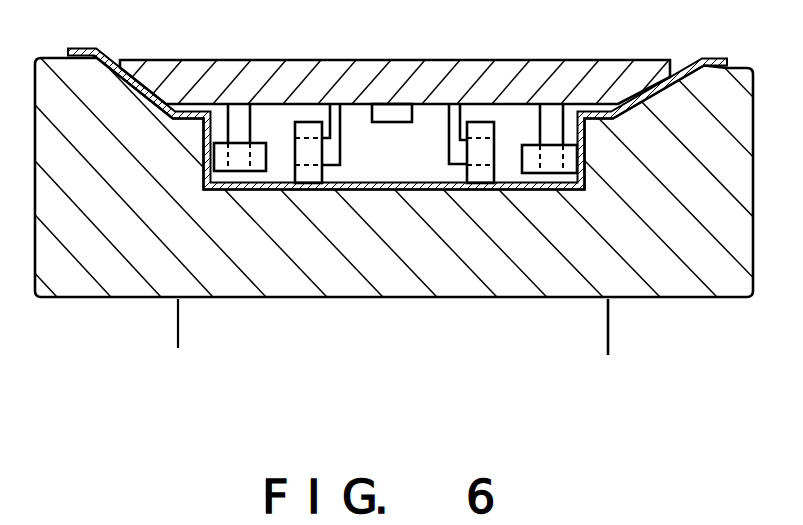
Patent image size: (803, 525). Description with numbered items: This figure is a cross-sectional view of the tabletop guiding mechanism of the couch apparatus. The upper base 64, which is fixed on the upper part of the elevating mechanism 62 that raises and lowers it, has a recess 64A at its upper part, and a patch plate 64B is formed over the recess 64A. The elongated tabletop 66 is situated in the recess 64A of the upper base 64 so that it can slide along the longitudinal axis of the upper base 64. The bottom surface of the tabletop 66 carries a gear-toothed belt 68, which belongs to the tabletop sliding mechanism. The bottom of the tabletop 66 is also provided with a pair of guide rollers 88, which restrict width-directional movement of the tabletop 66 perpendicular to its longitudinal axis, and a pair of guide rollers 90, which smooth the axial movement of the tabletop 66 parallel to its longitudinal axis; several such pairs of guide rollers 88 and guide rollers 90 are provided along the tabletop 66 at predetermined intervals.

The elevating mechanism 62 is at (595, 317).
The upper base 64 is at (693, 287).
The recess 64A is at (410, 158).
The patch plate 64B is at (362, 190).
The tabletop 66 is at (463, 83).
The belt 68 is at (397, 110).
The guide rollers 88 is at (262, 147).
The guide rollers 90 is at (315, 127).